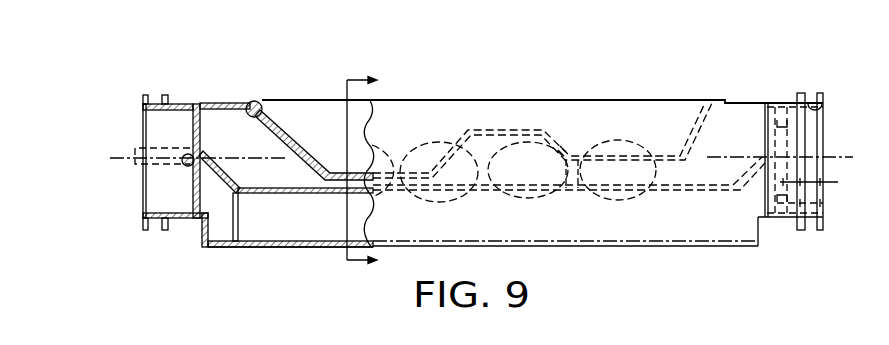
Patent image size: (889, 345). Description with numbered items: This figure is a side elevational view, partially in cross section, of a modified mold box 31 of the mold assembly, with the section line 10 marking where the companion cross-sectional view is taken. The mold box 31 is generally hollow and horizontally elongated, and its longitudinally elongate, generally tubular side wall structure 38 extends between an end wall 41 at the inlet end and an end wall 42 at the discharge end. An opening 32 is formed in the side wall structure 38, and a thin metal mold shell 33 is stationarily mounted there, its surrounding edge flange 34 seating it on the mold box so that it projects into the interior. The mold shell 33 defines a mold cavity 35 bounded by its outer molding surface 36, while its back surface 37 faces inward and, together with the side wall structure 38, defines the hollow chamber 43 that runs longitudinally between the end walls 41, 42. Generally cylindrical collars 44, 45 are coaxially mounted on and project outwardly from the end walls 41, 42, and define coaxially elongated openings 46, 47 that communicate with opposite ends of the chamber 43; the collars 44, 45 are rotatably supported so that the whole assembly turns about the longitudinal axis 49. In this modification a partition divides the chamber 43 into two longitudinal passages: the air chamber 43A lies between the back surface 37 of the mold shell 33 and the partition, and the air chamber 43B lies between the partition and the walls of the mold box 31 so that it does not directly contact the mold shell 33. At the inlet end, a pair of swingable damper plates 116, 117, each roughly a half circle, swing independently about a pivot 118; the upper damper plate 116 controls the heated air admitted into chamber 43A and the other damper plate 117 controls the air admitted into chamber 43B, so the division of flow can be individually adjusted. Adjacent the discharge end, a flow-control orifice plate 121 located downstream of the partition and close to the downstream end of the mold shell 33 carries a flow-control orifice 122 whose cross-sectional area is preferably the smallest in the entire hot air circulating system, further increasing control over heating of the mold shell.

The section line 10- 10 is at (350, 170).
The mold box 31 is at (225, 247).
The opening 32 is at (270, 100).
The mold shell 33 is at (460, 130).
The edge flange 34 is at (565, 98).
The mold cavity 35 is at (292, 115).
The outer molding surface 36 is at (452, 148).
The back surface 37 is at (461, 178).
The side wall structure 38 is at (292, 250).
The end wall 41 is at (200, 232).
The end wall 42 is at (767, 233).
The hollow chamber 43 is at (248, 233).
The air chamber 43A is at (284, 176).
The air chamber 43B is at (268, 222).
The collar 44 is at (196, 107).
The collar 45 is at (785, 100).
The opening 46 is at (147, 117).
The opening 47 is at (826, 108).
The axis 49 is at (128, 165).
The damper plate 116 is at (192, 127).
The damper plate 117 is at (193, 182).
The pivot 118 is at (183, 165).
The orifice plate 121 is at (823, 206).
The flow-control orifice 122 is at (826, 184).